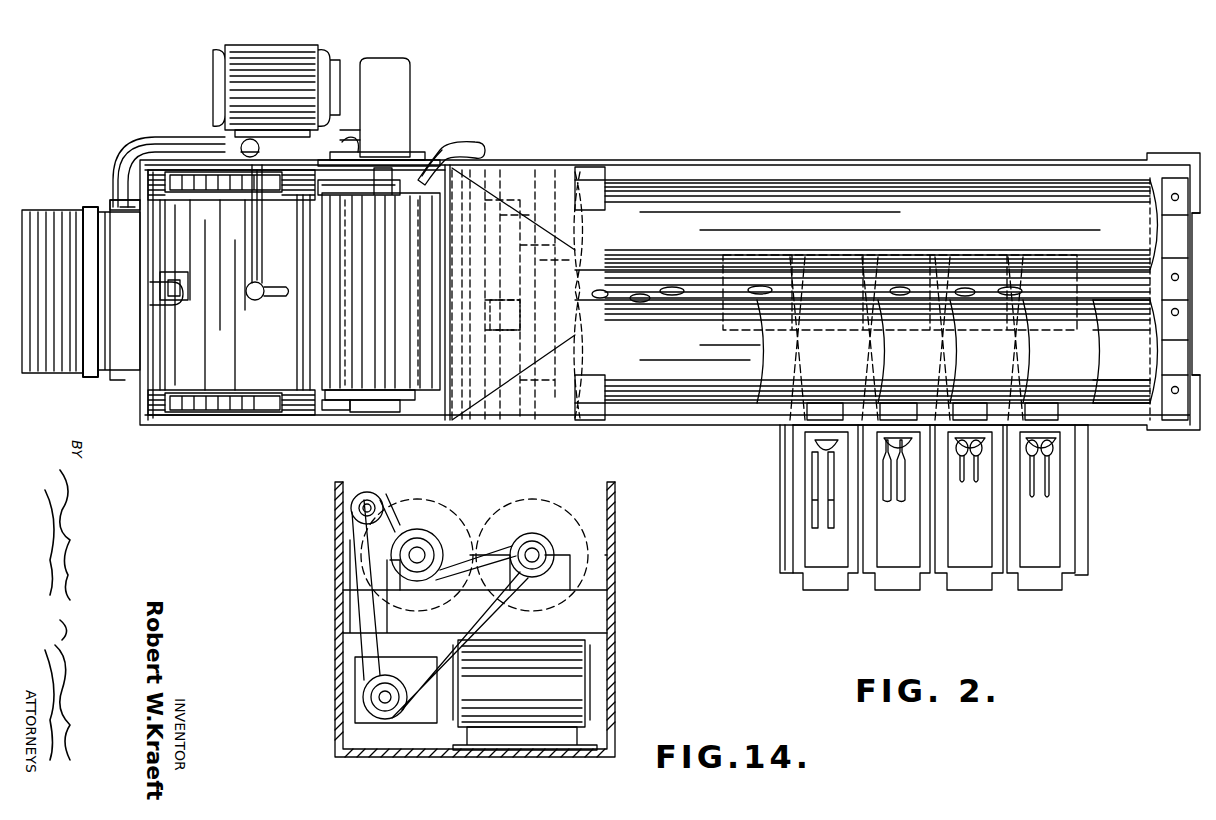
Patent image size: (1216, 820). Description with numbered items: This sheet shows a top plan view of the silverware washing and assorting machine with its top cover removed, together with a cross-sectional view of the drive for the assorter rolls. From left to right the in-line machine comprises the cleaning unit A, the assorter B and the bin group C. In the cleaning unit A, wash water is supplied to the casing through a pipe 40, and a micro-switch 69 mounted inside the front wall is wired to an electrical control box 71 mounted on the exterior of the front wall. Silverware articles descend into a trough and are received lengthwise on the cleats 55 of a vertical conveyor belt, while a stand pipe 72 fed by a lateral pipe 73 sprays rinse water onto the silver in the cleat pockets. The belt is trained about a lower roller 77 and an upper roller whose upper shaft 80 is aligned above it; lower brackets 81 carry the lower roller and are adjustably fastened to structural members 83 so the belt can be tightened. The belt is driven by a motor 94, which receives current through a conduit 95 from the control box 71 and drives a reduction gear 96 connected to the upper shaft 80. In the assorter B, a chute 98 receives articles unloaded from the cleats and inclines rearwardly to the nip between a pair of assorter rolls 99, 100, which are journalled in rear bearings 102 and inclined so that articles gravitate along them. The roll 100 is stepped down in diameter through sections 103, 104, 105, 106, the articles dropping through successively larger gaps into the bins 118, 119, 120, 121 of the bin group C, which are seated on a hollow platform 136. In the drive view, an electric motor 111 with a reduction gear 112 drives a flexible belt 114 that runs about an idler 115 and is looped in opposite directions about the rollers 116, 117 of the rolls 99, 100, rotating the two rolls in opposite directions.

In FIG. 2, the pipe 40 is at (468, 135).
In FIG. 2, the cleats 55 is at (360, 280).
In FIG. 2, the micro-switch 69 is at (185, 285).
In FIG. 2, the electrical control box 71 is at (55, 208).
In FIG. 2, the stand pipe 72 is at (254, 300).
In FIG. 2, the lateral pipe 73 is at (258, 228).
In FIG. 2, the lower roller 77 is at (395, 395).
In FIG. 2, the upper shaft 80 is at (384, 170).
In FIG. 2, the lower brackets 81 is at (356, 412).
In FIG. 2, the structural members 83 is at (332, 410).
In FIG. 2, the motor 94 is at (245, 50).
In FIG. 2, the conduit 95 is at (153, 148).
In FIG. 2, the reduction gear 96 is at (383, 80).
In FIG. 2, the chute 98 is at (490, 383).
In FIG. 2, the assorter roll 99 is at (683, 227).
In FIG. 14, the assorter roll 99 is at (428, 521).
In FIG. 2, the assorter roll 100 is at (660, 351).
In FIG. 14, the assorter roll 100 is at (548, 521).
In FIG. 2, the rear bearings 102 is at (1170, 240).
In FIG. 2, the section 103 is at (840, 355).
In FIG. 2, the section 104 is at (922, 355).
In FIG. 2, the section 105 is at (992, 355).
In FIG. 2, the section 106 is at (1064, 355).
In FIG. 14, the electric motor 111 is at (540, 693).
In FIG. 14, the reduction gear 112 is at (405, 668).
In FIG. 2, the flexible belt 114 is at (497, 315).
In FIG. 14, the flexible belt 114 is at (360, 640).
In FIG. 14, the idler 115 is at (372, 505).
In FIG. 14, the roller 116 is at (420, 550).
In FIG. 14, the roller 117 is at (535, 550).
In FIG. 2, the bin 118 is at (831, 590).
In FIG. 2, the bin 119 is at (896, 590).
In FIG. 2, the bin 120 is at (970, 590).
In FIG. 2, the bin 121 is at (1043, 590).
In FIG. 2, the platform 136 is at (783, 570).
In FIG. 2, the cleaning unit A is at (148, 430).
In FIG. 2, the assorter B is at (1008, 157).
In FIG. 2, the bin group C is at (1095, 508).